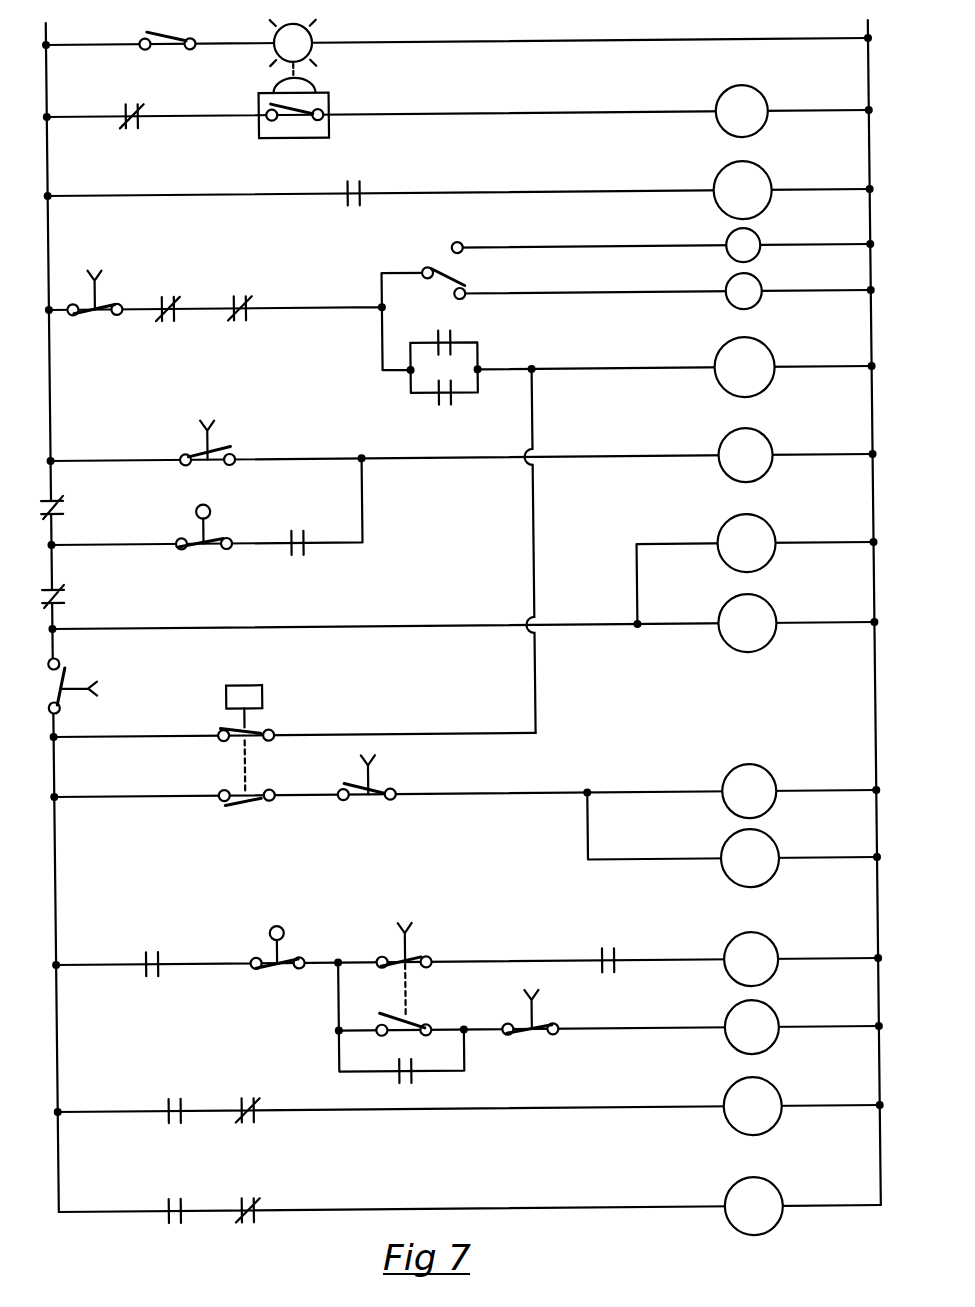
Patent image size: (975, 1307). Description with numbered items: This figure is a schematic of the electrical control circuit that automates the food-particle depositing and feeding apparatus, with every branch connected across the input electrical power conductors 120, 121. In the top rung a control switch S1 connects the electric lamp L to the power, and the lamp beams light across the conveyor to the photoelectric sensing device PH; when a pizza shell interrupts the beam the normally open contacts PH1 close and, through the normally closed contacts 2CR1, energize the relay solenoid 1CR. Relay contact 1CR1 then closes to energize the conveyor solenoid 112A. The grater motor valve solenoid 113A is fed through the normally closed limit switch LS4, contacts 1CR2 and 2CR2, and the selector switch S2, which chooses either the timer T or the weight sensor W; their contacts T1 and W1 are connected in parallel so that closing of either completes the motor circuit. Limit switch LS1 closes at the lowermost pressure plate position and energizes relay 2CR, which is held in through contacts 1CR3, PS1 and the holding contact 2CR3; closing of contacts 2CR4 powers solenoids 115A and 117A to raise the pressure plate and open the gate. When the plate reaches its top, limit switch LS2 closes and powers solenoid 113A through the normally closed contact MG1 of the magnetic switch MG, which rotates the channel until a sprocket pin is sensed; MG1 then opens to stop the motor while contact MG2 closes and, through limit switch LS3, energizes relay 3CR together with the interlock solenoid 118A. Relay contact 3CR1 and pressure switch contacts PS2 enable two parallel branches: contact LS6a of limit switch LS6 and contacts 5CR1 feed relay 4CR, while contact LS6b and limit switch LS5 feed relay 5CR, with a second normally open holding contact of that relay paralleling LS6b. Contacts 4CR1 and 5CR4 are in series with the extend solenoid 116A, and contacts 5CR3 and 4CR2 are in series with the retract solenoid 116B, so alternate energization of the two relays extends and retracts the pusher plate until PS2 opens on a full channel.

The input electrical power conductor 120 is at (49, 30).
The input electrical power conductor 121 is at (866, 25).
The control switch S1 is at (165, 34).
The electric lamp L is at (293, 43).
The photoelectric sensing device PH is at (326, 92).
The photoelectric sensing device contacts PH1 is at (293, 116).
The relay contacts 2CR1 is at (134, 106).
The relay switch operating solenoid 1CR is at (742, 111).
The electrical solenoid 112A is at (742, 190).
The relay contact 1CR1 is at (360, 190).
The limit switch LS4 is at (104, 302).
The relay contact 1CR2 is at (164, 299).
The relay contact 2CR2 is at (244, 300).
The manually operable switch S2 is at (439, 268).
The timer T is at (743, 245).
The weight sensor W is at (744, 291).
The timer contacts T1 is at (457, 328).
The weight sensor contacts W1 is at (438, 414).
The hydraulic valve solenoid 113A is at (744, 367).
The limit switch LS1 is at (216, 438).
The relay 2CR is at (745, 455).
The relay contacts 1CR3 is at (57, 506).
The pressure switch contacts PS1 is at (214, 537).
The relay contacts 2CR3 is at (304, 558).
The electrical solenoid 115A is at (746, 543).
The relay contacts 2CR4 is at (66, 578).
The electrical solenoid 117A is at (747, 623).
The limit switch LS2 is at (71, 678).
The magnetic field responsive switch device MG is at (252, 712).
The magnetic switch contact MG1 is at (254, 727).
The magnetic switch contact MG2 is at (224, 789).
The limit switch LS3 is at (372, 788).
The relay switch 3CR is at (749, 791).
The electrical operating solenoid 118A is at (750, 858).
The relay contacts 3CR1 is at (140, 953).
The pressure switch contacts PS2 is at (280, 955).
The limit switch LS6 is at (398, 934).
The limit switch contact LS6a is at (418, 957).
The relay contacts 5CR1 is at (600, 949).
The relay 4CR is at (751, 959).
The limit switch contact LS6b is at (401, 1018).
The limit switch LS5 is at (532, 1020).
The relay 5CR is at (752, 1027).
The relay contacts 4CR1 is at (168, 1081).
The relay contact 5CR4 is at (240, 1129).
The valve solenoid 116A is at (752, 1106).
The relay contacts 5CR3 is at (167, 1183).
The relay contacts 4CR2 is at (234, 1225).
The valve solenoid 116B is at (754, 1206).